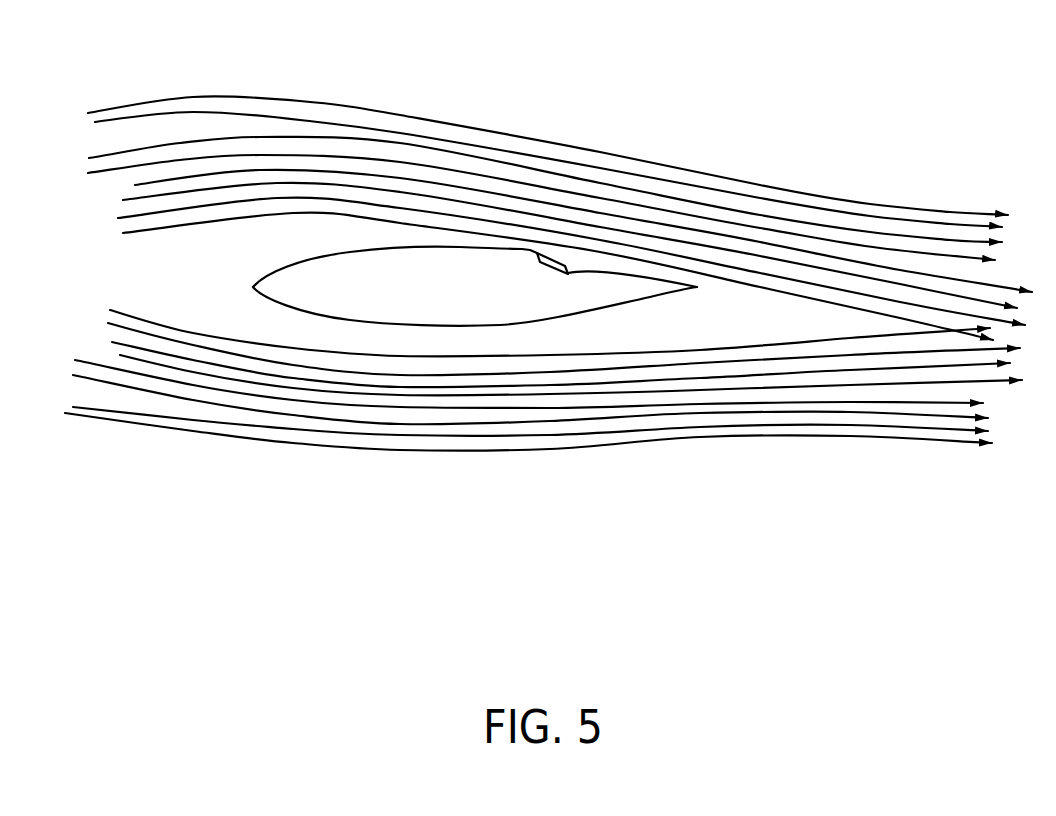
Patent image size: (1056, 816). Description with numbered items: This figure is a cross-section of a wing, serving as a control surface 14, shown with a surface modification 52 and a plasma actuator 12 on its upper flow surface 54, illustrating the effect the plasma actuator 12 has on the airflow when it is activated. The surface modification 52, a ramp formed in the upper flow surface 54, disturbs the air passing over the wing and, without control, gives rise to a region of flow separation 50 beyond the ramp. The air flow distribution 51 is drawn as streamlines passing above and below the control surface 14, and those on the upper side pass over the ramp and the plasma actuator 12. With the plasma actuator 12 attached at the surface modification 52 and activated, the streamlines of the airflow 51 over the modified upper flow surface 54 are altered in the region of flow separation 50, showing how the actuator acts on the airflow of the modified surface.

The plasma actuator 12 is at (600, 218).
The control surface 14 is at (465, 328).
The region of flow separation 50 is at (560, 262).
The air flow distribution 51 is at (858, 223).
The surface modification 52 is at (525, 250).
The upper flow surface 54 is at (350, 252).